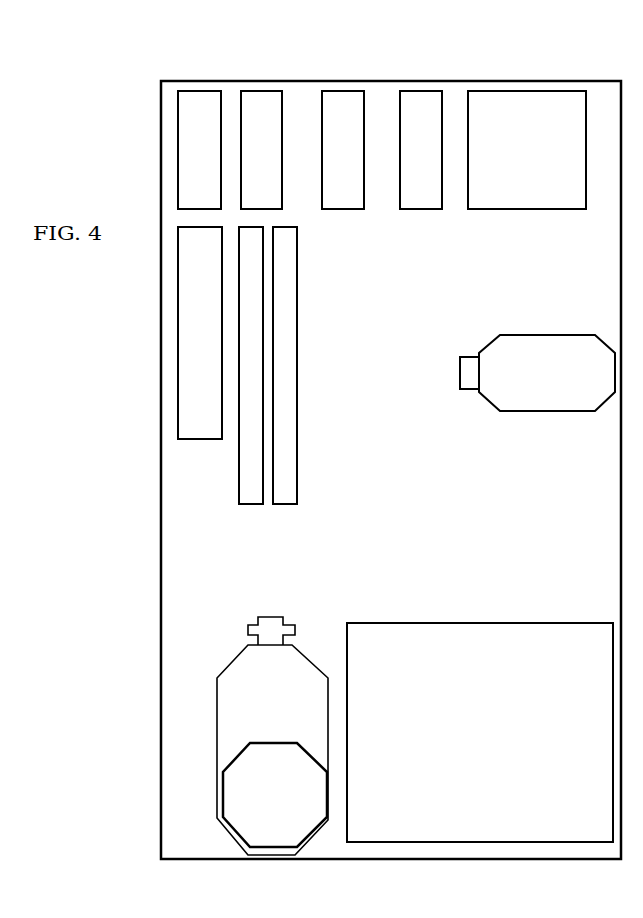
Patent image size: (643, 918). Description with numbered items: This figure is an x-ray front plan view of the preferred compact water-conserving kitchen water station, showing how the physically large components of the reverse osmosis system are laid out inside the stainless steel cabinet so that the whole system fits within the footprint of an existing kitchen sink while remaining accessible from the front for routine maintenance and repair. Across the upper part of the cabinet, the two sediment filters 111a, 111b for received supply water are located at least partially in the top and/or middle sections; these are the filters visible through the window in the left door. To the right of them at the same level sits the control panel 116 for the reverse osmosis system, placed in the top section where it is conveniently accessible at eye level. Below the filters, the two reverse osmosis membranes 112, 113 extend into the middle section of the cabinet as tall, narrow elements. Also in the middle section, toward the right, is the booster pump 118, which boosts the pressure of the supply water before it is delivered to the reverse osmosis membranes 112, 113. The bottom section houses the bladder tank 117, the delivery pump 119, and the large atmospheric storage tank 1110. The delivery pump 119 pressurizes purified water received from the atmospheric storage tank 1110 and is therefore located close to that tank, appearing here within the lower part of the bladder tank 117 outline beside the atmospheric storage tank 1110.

The sediment filter 111a is at (193, 108).
The sediment filter 111b is at (267, 100).
The reverse osmosis membrane 112 is at (247, 460).
The reverse osmosis membrane 113 is at (293, 460).
The control panel 116 is at (538, 164).
The bladder tank 117 is at (291, 719).
The booster pump 118 is at (571, 384).
The delivery pump 119 is at (243, 798).
The atmospheric storage tank 1110 is at (492, 732).